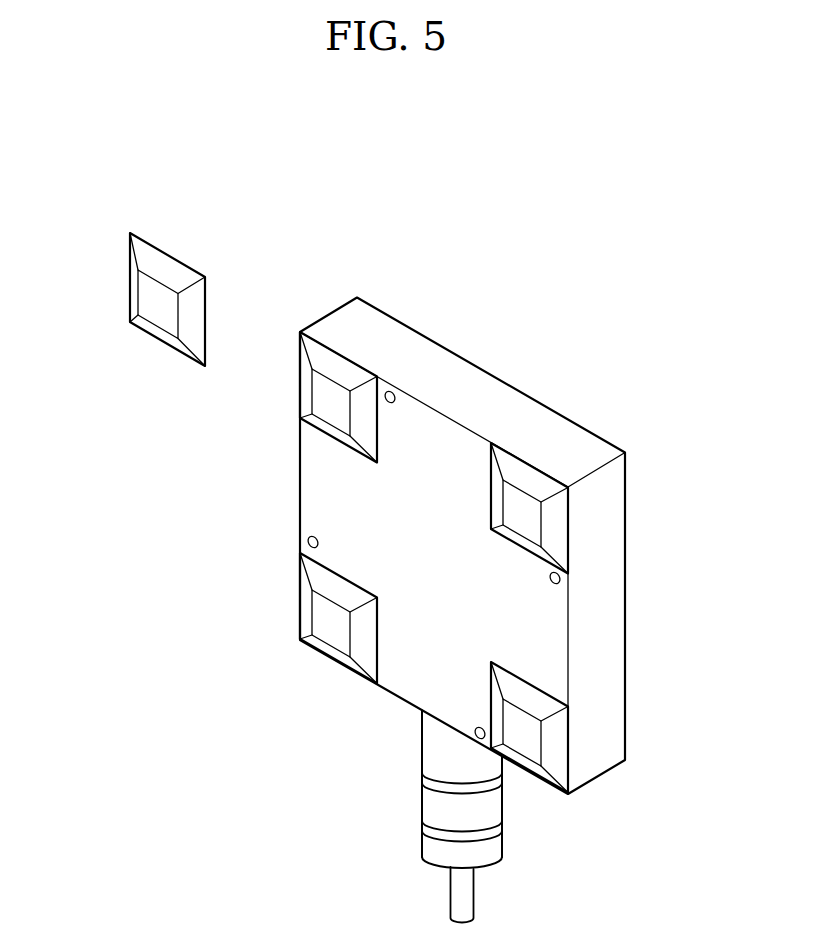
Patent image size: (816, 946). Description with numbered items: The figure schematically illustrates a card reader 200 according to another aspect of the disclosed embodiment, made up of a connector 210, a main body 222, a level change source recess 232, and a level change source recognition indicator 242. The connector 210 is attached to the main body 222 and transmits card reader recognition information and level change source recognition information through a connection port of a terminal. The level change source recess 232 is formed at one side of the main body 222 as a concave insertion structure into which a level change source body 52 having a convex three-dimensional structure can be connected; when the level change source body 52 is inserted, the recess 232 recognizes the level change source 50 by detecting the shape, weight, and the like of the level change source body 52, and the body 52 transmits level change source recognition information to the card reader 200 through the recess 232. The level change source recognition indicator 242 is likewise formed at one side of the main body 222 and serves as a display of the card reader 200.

The level change source 50 is at (100, 266).
The level change source body 52 is at (167, 254).
The card reader 200 is at (260, 653).
The connector 210 is at (422, 777).
The main body 222 is at (625, 607).
The level change source recess 232 is at (330, 450).
The level change source recognition indicator 242 is at (394, 391).